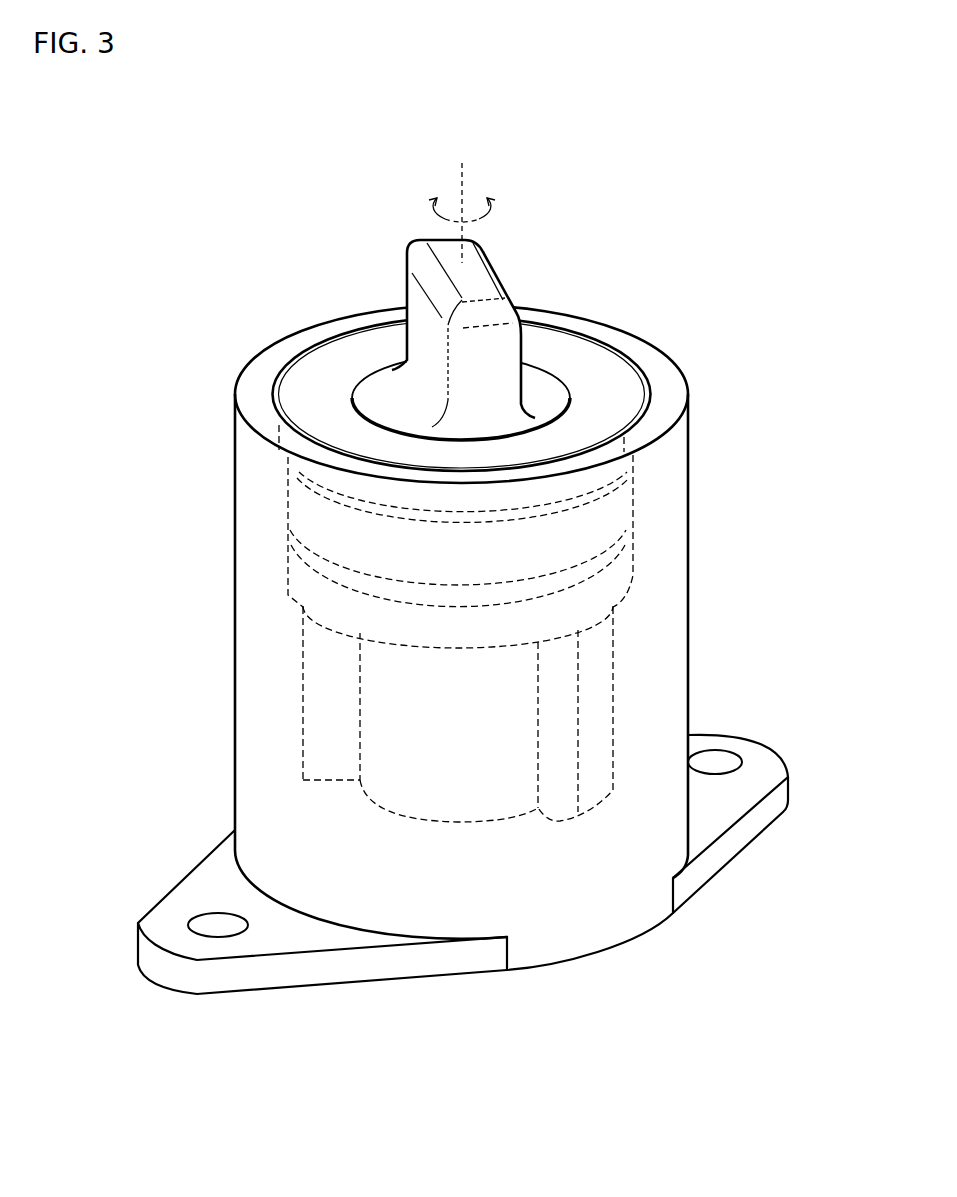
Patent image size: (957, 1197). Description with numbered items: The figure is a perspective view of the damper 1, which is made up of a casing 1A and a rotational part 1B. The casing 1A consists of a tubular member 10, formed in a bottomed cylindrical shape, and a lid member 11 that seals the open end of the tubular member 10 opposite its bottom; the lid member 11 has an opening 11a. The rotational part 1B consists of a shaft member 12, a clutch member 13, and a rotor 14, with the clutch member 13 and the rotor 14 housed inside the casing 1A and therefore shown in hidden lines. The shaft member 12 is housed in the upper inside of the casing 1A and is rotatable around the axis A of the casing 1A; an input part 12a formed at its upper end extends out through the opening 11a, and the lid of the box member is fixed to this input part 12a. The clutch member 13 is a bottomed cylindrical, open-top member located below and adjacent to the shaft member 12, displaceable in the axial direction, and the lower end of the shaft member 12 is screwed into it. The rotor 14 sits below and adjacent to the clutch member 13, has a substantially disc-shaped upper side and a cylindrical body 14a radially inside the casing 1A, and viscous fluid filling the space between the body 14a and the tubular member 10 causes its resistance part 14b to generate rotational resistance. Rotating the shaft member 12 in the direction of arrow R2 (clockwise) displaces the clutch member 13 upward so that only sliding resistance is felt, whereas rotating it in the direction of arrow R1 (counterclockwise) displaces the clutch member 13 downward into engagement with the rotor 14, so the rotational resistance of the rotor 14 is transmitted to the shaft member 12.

The damper 1 is at (463, 569).
The casing 1A is at (704, 518).
The rotational part 1B is at (250, 597).
The tubular member 10 is at (665, 655).
The lid member 11 is at (623, 385).
The opening 11a is at (555, 383).
The shaft member 12 is at (408, 333).
The input part 12a is at (424, 335).
The clutch member 13 is at (295, 505).
The rotor 14 is at (297, 578).
The cylindrical body 14a is at (397, 738).
The resistance part 14b is at (323, 685).
The axis A is at (461, 203).
The arrow R1 is at (479, 201).
The arrow R2 is at (426, 200).